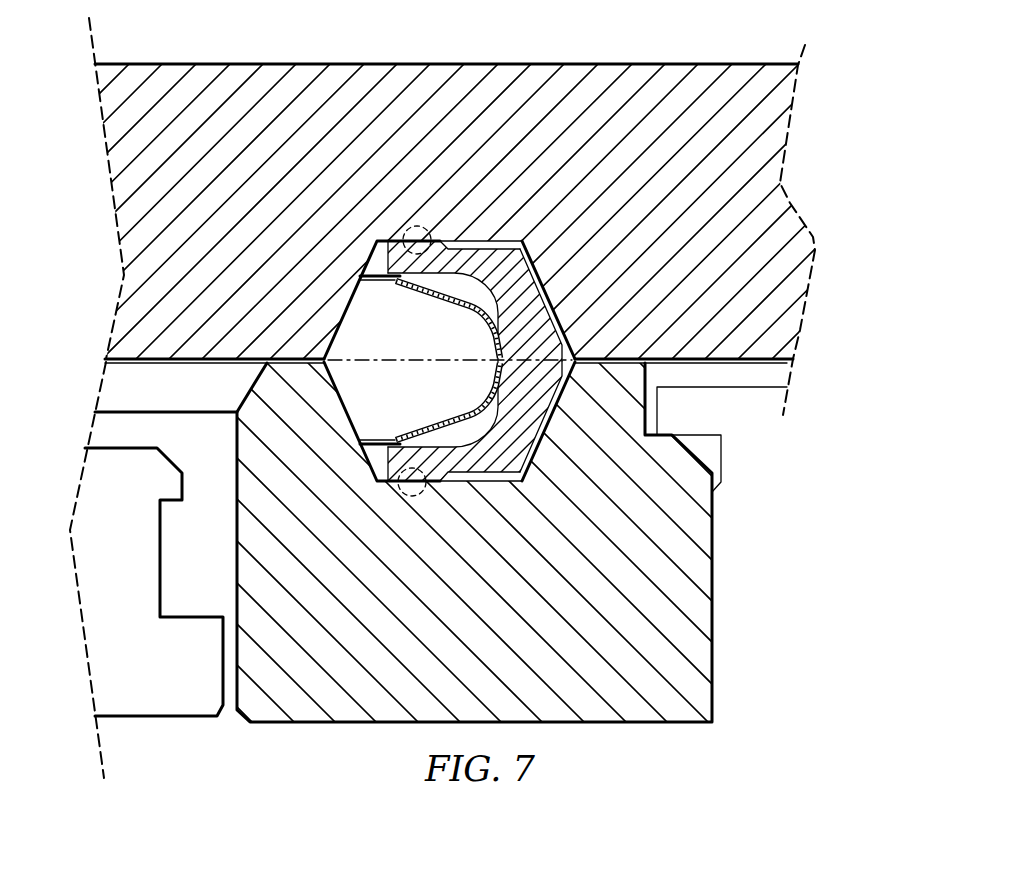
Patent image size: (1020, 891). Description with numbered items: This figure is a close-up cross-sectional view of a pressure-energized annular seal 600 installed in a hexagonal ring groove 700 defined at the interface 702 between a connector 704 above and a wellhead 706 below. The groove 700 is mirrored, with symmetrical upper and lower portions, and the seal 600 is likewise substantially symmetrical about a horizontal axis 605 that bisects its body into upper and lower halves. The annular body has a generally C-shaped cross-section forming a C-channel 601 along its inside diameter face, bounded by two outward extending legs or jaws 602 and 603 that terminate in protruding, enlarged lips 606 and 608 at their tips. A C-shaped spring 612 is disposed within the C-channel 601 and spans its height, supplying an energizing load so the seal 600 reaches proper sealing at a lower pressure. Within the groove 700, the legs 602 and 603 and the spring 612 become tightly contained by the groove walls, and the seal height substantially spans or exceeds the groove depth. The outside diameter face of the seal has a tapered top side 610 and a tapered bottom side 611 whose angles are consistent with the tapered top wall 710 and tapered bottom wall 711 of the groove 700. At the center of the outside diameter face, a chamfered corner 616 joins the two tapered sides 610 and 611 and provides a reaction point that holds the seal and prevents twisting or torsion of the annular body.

The pressure-energized annular seal 600 is at (515, 233).
The C-channel 601 is at (382, 326).
The upper leg 602 is at (388, 262).
The lower leg 603 is at (376, 462).
The horizontal axis 605 is at (457, 362).
The enlarged lip of upper leg 606 is at (410, 230).
The enlarged lip of lower leg 608 is at (398, 497).
The tapered top side 610 is at (565, 298).
The tapered bottom side 611 is at (561, 424).
The C-shaped spring 612 is at (440, 423).
The chamfered corner 616 is at (602, 364).
The hexagonal ring groove 700 is at (358, 369).
The interface 702 is at (812, 362).
The connector 704 is at (752, 290).
The wellhead 706 is at (672, 663).
The tapered top wall 710 is at (528, 270).
The tapered bottom wall 711 is at (527, 452).